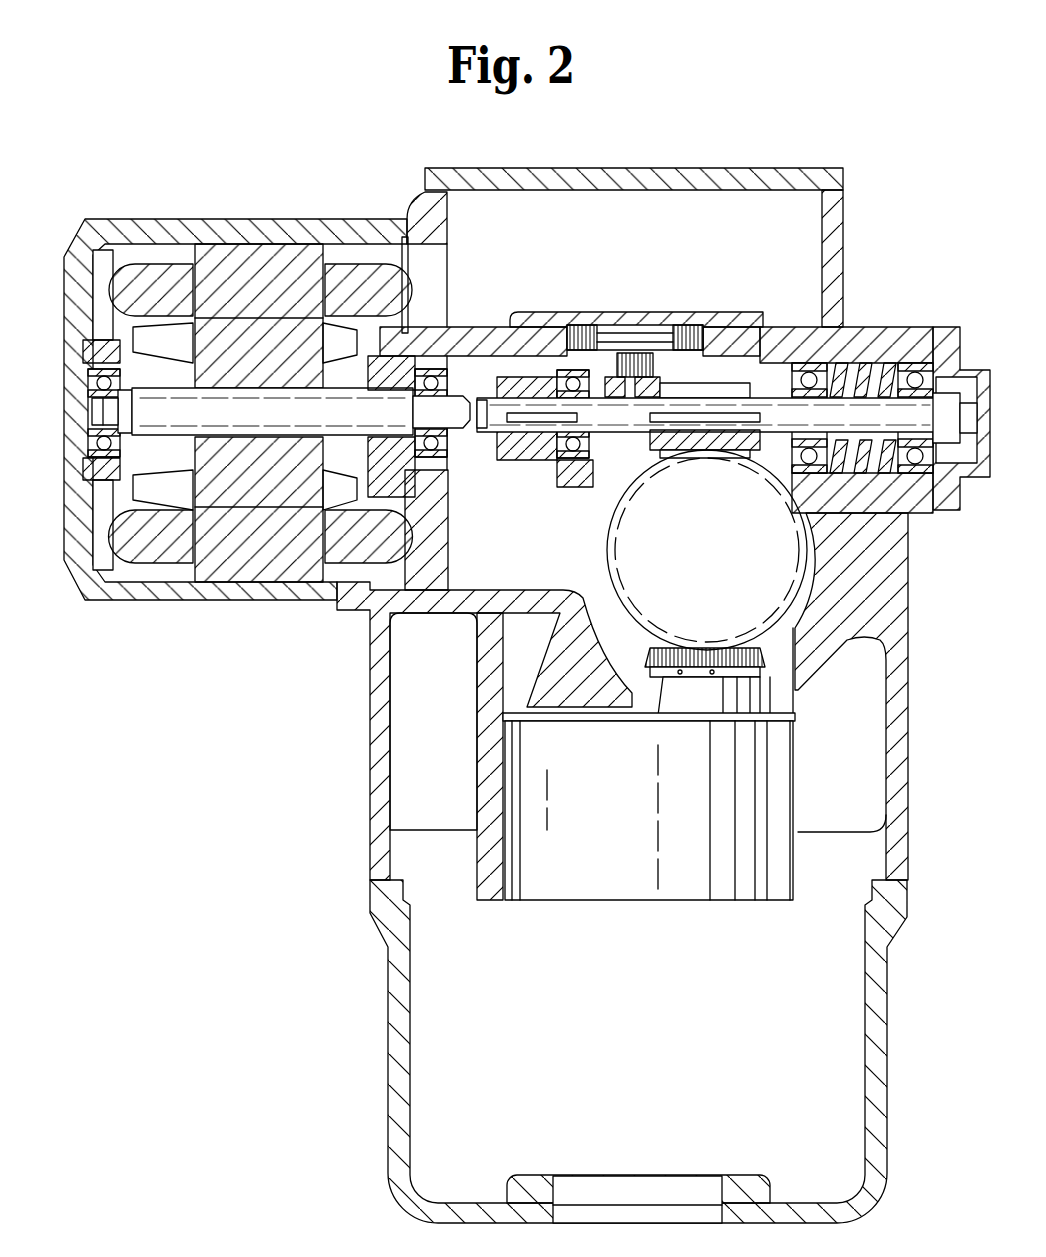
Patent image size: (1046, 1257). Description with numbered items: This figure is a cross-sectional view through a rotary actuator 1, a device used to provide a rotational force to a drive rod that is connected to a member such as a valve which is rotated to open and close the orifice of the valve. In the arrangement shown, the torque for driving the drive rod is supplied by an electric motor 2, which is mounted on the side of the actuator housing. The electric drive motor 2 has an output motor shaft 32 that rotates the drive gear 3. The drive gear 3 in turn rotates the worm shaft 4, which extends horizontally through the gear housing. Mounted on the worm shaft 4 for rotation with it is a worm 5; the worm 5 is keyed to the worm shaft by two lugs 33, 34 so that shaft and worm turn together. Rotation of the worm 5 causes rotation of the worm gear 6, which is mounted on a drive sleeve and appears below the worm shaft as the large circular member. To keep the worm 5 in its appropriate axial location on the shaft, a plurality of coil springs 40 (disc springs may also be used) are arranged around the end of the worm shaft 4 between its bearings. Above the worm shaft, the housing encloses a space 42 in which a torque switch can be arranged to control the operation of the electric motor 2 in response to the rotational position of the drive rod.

The rotary actuator 1 is at (98, 214).
The electric motor 2 is at (222, 260).
The output motor shaft 32 is at (268, 400).
The drive gear 3 is at (498, 375).
The worm shaft 4 is at (599, 408).
The worm 5 is at (707, 393).
The space 42 is at (775, 242).
The coil springs 40 is at (866, 395).
The worm gear 6 is at (800, 597).
The lug 33 is at (647, 431).
The lug 34 is at (750, 423).